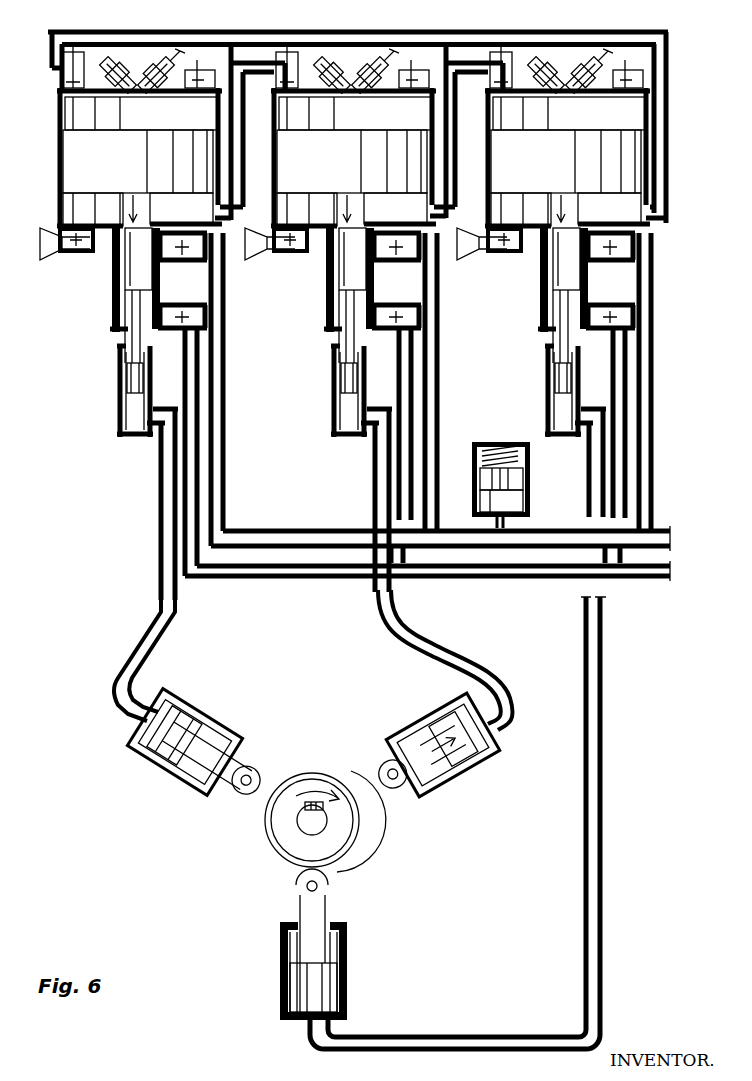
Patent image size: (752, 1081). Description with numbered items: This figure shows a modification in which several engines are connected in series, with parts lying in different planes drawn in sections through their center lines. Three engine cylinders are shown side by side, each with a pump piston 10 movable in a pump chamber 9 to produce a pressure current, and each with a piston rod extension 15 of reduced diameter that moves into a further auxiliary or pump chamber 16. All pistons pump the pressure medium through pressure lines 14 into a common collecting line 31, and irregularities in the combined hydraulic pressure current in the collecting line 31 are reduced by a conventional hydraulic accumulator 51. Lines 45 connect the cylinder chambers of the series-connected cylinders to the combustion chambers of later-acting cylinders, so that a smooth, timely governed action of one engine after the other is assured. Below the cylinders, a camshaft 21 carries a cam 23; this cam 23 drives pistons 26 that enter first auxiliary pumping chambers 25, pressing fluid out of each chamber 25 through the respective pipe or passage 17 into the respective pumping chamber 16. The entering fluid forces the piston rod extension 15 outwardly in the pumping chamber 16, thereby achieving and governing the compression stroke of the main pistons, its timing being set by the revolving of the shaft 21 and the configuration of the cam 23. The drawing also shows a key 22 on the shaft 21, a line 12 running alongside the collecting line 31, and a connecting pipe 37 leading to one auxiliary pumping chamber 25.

The lines 45 is at (412, 33).
The pump piston 10 is at (122, 278).
The pump chamber 9 is at (120, 313).
The piston rod extension 15 is at (130, 379).
The pump chamber 16 is at (130, 413).
The passage 17 is at (161, 414).
The pressure lines 14 is at (218, 361).
The supply pipe 12 is at (190, 353).
The collecting line 31 is at (288, 531).
The hydraulic accumulator 51 is at (485, 479).
The connecting pipe 37 is at (165, 616).
The first auxiliary pumping chamber 25 is at (183, 708).
The piston 26 is at (219, 737).
The cam 23 is at (360, 776).
The key 22 is at (305, 806).
The camshaft 21 is at (300, 826).